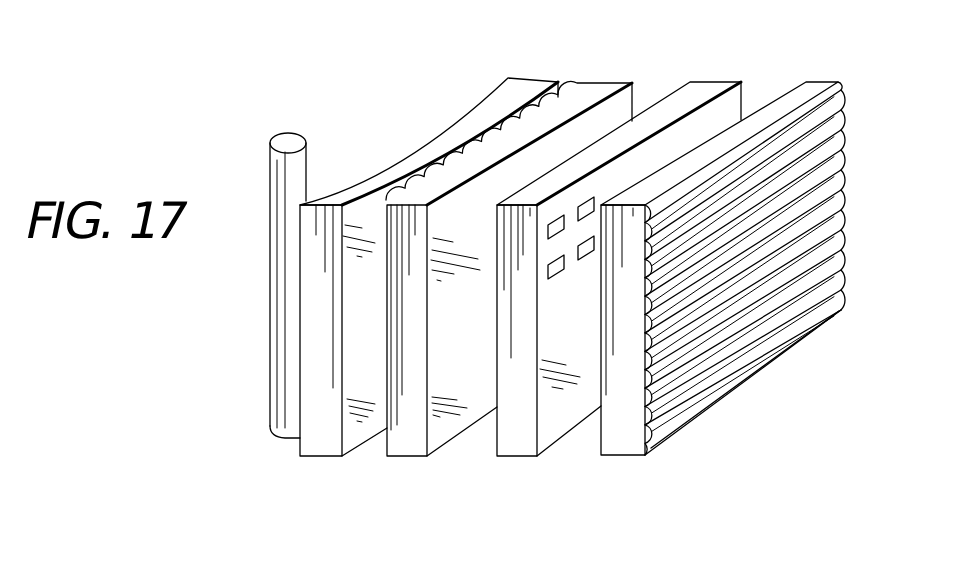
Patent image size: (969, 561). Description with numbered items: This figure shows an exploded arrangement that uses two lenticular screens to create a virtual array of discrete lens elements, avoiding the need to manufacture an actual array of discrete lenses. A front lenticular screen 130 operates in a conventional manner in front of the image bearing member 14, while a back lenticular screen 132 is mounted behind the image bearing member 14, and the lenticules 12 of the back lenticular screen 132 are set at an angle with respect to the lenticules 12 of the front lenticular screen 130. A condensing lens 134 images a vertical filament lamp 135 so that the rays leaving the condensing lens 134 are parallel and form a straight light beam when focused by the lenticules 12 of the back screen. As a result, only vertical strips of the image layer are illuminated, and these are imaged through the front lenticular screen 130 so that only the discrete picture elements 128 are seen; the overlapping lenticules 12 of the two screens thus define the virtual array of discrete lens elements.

The lenticules 12 is at (576, 82).
The image bearing member 14 is at (703, 83).
The discrete picture elements 128 is at (552, 263).
The front lenticular screen 130 is at (738, 392).
The back lenticular screen 132 is at (380, 390).
The condensing lens 134 is at (315, 428).
The vertical filament lamp 135 is at (282, 288).